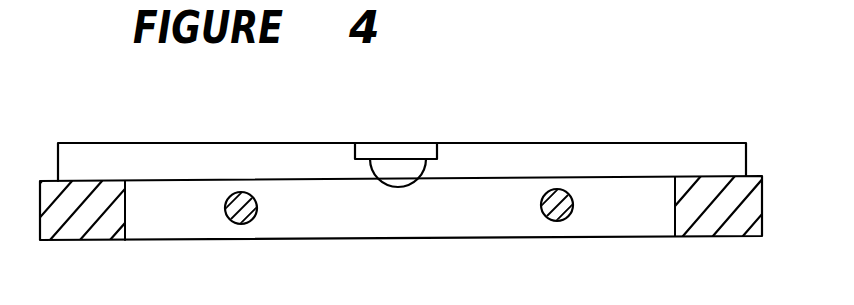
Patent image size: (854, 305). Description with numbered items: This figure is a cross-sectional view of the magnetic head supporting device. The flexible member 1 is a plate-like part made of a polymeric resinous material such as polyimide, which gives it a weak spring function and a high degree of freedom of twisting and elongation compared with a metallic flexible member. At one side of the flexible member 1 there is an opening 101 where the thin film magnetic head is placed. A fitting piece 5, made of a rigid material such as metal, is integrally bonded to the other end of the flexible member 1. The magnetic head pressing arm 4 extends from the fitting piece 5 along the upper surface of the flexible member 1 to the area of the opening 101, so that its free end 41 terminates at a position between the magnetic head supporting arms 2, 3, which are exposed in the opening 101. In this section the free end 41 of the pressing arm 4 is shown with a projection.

The flexible member 1 is at (712, 190).
The fitting piece 5 is at (97, 165).
The magnetic head pressing arm 4 is at (397, 157).
The free end 41 is at (397, 172).
The magnetic head supporting arm 2 is at (241, 224).
The magnetic head supporting arm 3 is at (556, 222).
The opening 101 is at (589, 190).